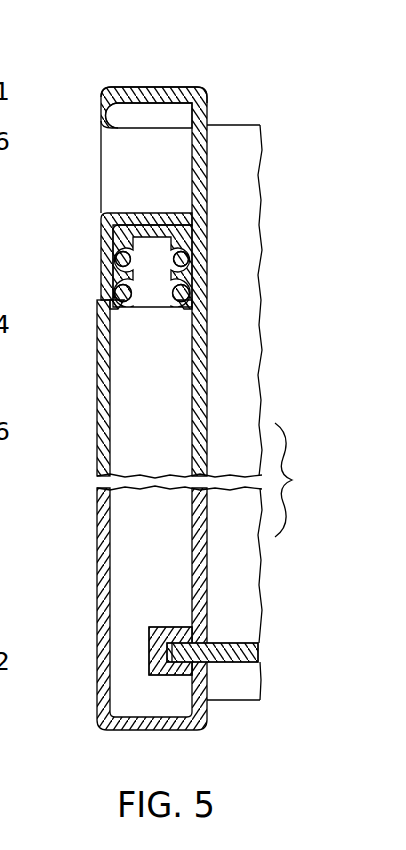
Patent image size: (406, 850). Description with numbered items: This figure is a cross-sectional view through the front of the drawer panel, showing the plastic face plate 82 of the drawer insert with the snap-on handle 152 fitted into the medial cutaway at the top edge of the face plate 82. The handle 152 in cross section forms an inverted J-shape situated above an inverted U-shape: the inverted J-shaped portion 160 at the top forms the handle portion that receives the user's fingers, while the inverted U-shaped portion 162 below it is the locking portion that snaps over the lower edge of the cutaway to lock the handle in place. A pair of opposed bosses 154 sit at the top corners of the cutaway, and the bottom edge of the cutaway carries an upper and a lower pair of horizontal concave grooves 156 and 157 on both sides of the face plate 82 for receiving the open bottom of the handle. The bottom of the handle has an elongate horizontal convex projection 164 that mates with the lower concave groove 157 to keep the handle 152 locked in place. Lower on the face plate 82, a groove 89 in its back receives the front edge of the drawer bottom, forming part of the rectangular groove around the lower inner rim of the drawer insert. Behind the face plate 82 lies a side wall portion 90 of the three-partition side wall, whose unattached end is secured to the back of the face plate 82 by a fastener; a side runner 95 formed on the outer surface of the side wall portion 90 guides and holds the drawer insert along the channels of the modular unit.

The face plate 82 is at (95, 593).
The groove in the back of the face plate 89 is at (160, 647).
The side wall portion 90 is at (235, 703).
The side runner 95 is at (268, 658).
The snap-on handle 152 is at (219, 188).
The boss 154 is at (172, 118).
The upper horizontal concave groove 156 is at (122, 255).
The lower horizontal concave groove 157 is at (113, 310).
The inverted J-shaped portion 160 is at (112, 88).
The inverted U-shaped portion 162 is at (150, 214).
The elongate horizontal convex projection 164 is at (112, 300).